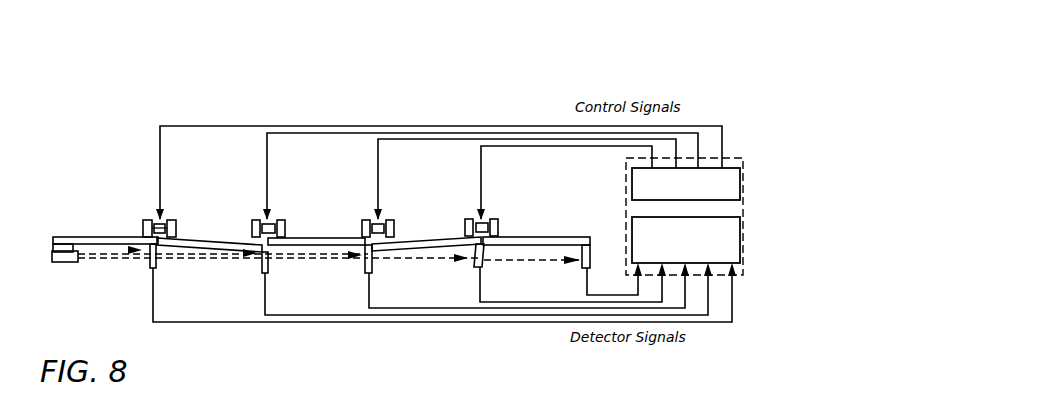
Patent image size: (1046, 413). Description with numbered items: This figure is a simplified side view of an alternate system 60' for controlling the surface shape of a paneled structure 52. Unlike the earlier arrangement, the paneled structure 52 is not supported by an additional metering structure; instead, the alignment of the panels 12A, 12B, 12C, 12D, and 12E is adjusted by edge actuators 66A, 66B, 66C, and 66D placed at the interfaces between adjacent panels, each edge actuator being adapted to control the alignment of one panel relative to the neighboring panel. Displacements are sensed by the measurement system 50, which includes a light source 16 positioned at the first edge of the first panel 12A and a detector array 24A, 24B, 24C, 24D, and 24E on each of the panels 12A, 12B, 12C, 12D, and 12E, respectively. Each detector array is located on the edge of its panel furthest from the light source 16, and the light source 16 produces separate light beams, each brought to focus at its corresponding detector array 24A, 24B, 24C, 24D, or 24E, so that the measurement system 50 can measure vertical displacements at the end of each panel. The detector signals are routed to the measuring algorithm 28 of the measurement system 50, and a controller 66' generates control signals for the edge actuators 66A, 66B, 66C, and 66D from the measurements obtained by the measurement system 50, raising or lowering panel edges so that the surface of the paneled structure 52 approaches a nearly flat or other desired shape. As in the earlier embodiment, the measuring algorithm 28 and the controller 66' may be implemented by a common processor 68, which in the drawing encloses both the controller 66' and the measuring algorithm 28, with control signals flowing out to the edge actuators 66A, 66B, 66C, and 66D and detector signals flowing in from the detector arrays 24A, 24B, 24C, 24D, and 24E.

The alternate system for controlling the surface shape 60' is at (731, 55).
The common processor 68 is at (743, 158).
The controller 66' is at (702, 187).
The measuring algorithm 28 is at (740, 259).
The first panel 12A is at (112, 236).
The panel 12B is at (228, 240).
The panel 12C is at (321, 238).
The panel 12D is at (428, 238).
The panel 12E is at (538, 237).
The edge actuator 66A is at (147, 220).
The edge actuator 66B is at (254, 221).
The edge actuator 66C is at (362, 222).
The edge actuator 66D is at (465, 221).
The detector array 24A is at (150, 270).
The detector array 24B is at (261, 276).
The detector array 24C is at (363, 276).
The detector array 24D is at (475, 270).
The detector array 24E is at (583, 271).
The paneled structure 52 is at (43, 250).
The light source 16 is at (78, 263).
The measurement system 50 is at (102, 290).